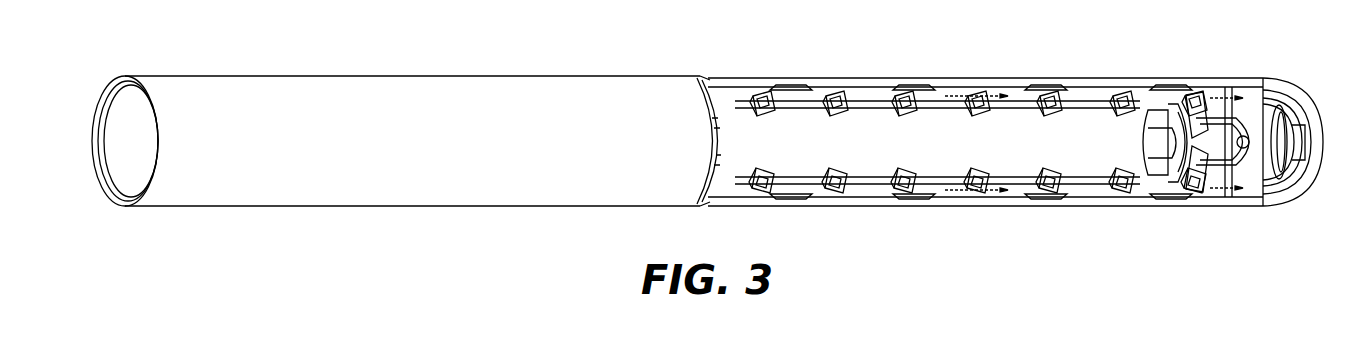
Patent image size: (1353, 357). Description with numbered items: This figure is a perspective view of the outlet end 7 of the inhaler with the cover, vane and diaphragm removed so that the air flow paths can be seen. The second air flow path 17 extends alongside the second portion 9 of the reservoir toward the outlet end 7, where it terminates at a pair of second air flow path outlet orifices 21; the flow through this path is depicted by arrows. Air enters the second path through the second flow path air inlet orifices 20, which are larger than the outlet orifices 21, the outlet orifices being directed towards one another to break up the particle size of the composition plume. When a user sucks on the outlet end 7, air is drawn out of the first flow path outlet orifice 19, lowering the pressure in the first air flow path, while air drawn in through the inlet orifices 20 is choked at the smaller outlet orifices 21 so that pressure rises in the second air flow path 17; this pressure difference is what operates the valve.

The outlet end 7 is at (1316, 92).
The second portion of the reservoir 9 is at (940, 152).
The second air flow path 17 is at (1032, 92).
The first flow path outlet orifice 19 is at (1290, 168).
The second flow path air inlet orifices 20 is at (870, 87).
The second air flow path outlet orifices 21 is at (1243, 107).